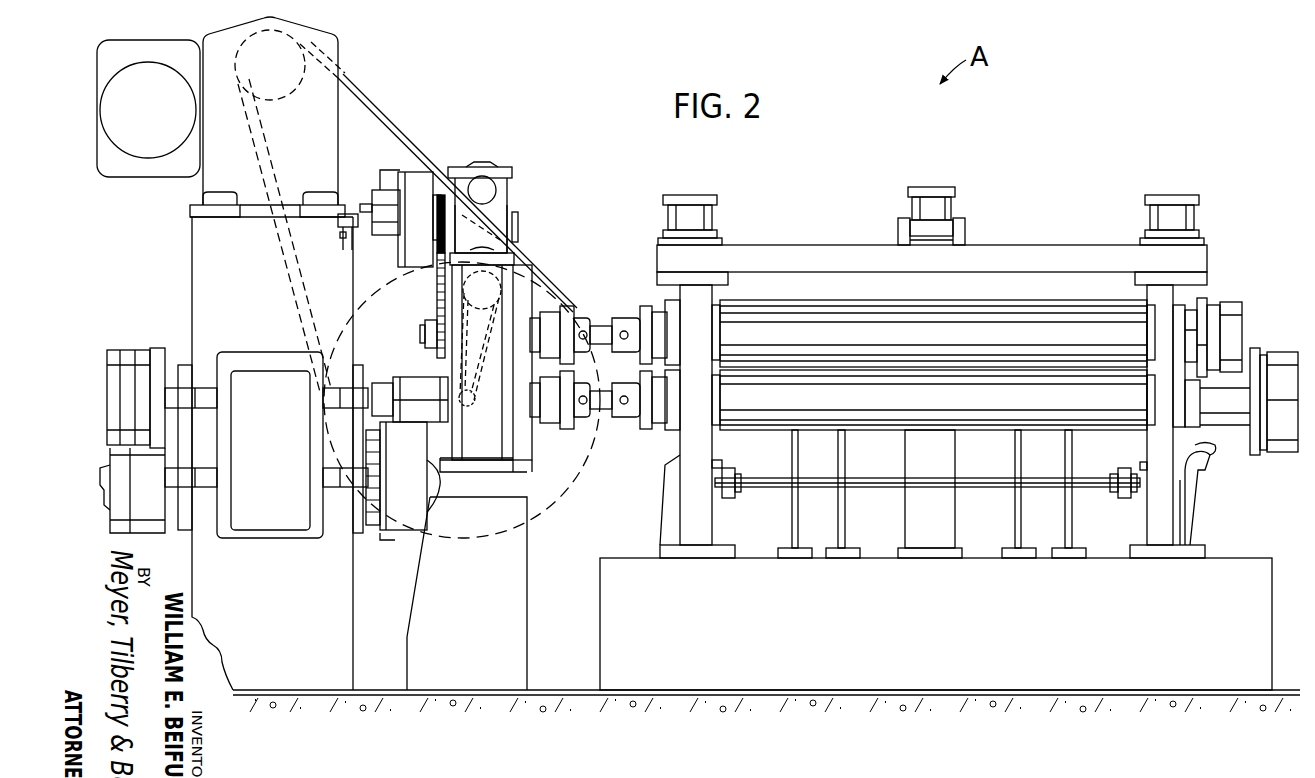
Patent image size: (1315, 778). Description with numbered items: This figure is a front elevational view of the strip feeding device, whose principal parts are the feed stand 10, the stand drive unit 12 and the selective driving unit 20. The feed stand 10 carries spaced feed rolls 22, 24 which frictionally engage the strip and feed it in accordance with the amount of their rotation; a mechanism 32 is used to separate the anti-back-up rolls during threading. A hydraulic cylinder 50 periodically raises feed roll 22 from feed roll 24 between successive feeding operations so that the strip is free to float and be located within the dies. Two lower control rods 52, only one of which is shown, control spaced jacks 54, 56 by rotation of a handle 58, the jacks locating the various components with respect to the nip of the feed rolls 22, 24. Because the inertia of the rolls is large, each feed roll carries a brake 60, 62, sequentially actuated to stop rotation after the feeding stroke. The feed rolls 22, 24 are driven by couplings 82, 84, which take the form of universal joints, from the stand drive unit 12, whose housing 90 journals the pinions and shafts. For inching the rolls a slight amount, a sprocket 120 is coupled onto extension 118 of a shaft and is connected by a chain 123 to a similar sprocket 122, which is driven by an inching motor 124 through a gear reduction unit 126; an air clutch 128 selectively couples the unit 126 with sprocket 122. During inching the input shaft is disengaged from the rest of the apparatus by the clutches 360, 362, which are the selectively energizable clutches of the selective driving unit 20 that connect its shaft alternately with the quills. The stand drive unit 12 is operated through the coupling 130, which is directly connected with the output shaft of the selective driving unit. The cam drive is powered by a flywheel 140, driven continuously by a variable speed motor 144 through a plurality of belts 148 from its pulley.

The feed stand 10 is at (1068, 140).
The stand drive unit 12 is at (538, 262).
The selective driving unit 20 is at (205, 336).
The feed roll 22 is at (1028, 305).
The feed roll 24 is at (1104, 428).
The mechanism 32 is at (955, 205).
The hydraulic cylinder 50 is at (718, 214).
The lower control rod 52 is at (868, 478).
The jack 54 is at (722, 463).
The jack 56 is at (1147, 488).
The handle 58 is at (1202, 480).
The brake 60 is at (1243, 312).
The brake 62 is at (1283, 350).
The coupling 82 is at (576, 316).
The coupling 84 is at (578, 404).
The housing 90 is at (500, 440).
The extension 118 is at (427, 330).
The sprocket 120 is at (420, 348).
The sprocket 122 is at (448, 170).
The chain 123 is at (435, 292).
The inching motor 124 is at (510, 190).
The gear reduction unit 126 is at (514, 220).
The air clutch 128 is at (398, 255).
The coupling 130 is at (445, 428).
The flywheel 140 is at (370, 296).
The variable speed motor 144 is at (340, 56).
The belts 148 is at (360, 113).
The clutch 360 is at (125, 510).
The clutch 362 is at (396, 530).